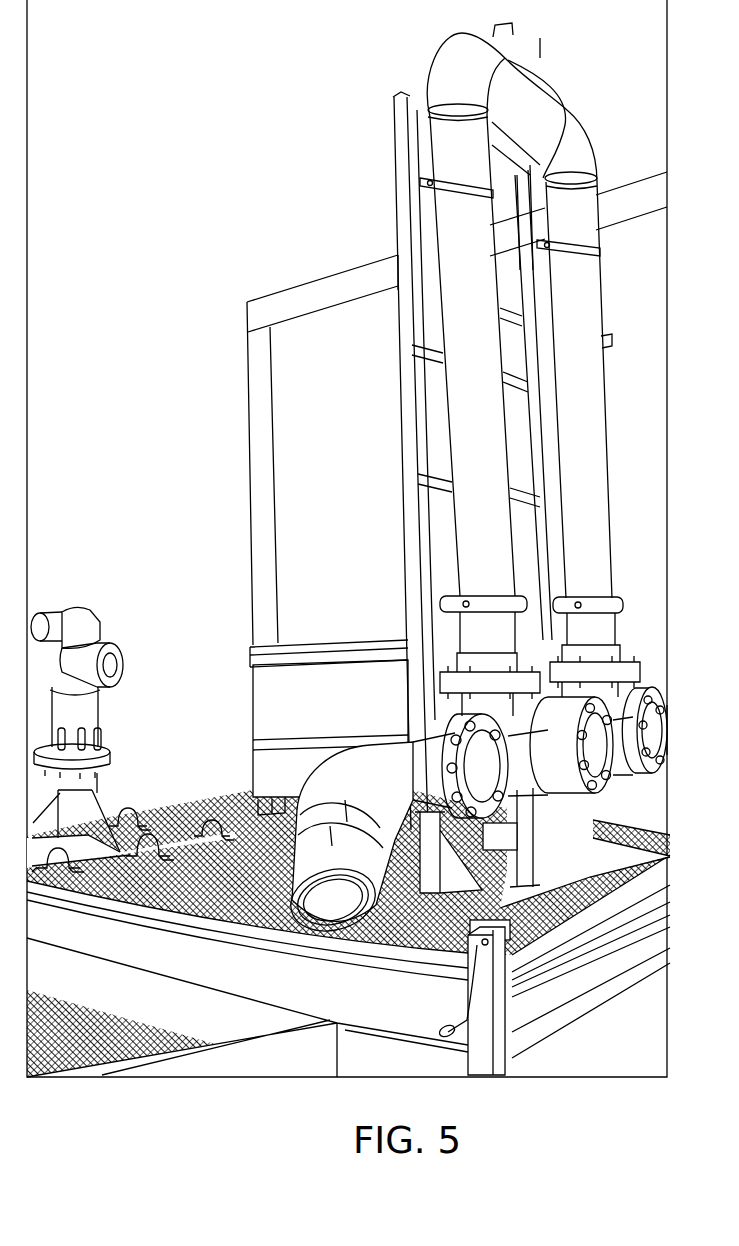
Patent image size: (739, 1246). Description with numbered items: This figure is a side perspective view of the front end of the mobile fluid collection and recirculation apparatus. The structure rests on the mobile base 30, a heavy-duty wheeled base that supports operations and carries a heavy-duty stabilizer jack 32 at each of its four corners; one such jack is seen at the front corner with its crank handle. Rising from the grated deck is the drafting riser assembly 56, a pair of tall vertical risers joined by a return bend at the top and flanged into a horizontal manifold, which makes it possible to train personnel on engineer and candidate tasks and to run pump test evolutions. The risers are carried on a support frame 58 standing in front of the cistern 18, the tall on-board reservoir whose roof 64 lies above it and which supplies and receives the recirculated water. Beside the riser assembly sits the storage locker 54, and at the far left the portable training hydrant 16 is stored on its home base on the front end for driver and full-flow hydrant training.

The portable training hydrant 16 is at (67, 611).
The cistern 18 is at (258, 397).
The mobile base 30 is at (373, 1017).
The stabilizer jack 32 is at (485, 1067).
The storage locker 54 is at (253, 690).
The drafting riser assembly 56 is at (588, 391).
The support frame 58 is at (393, 150).
The roof 64 is at (305, 290).